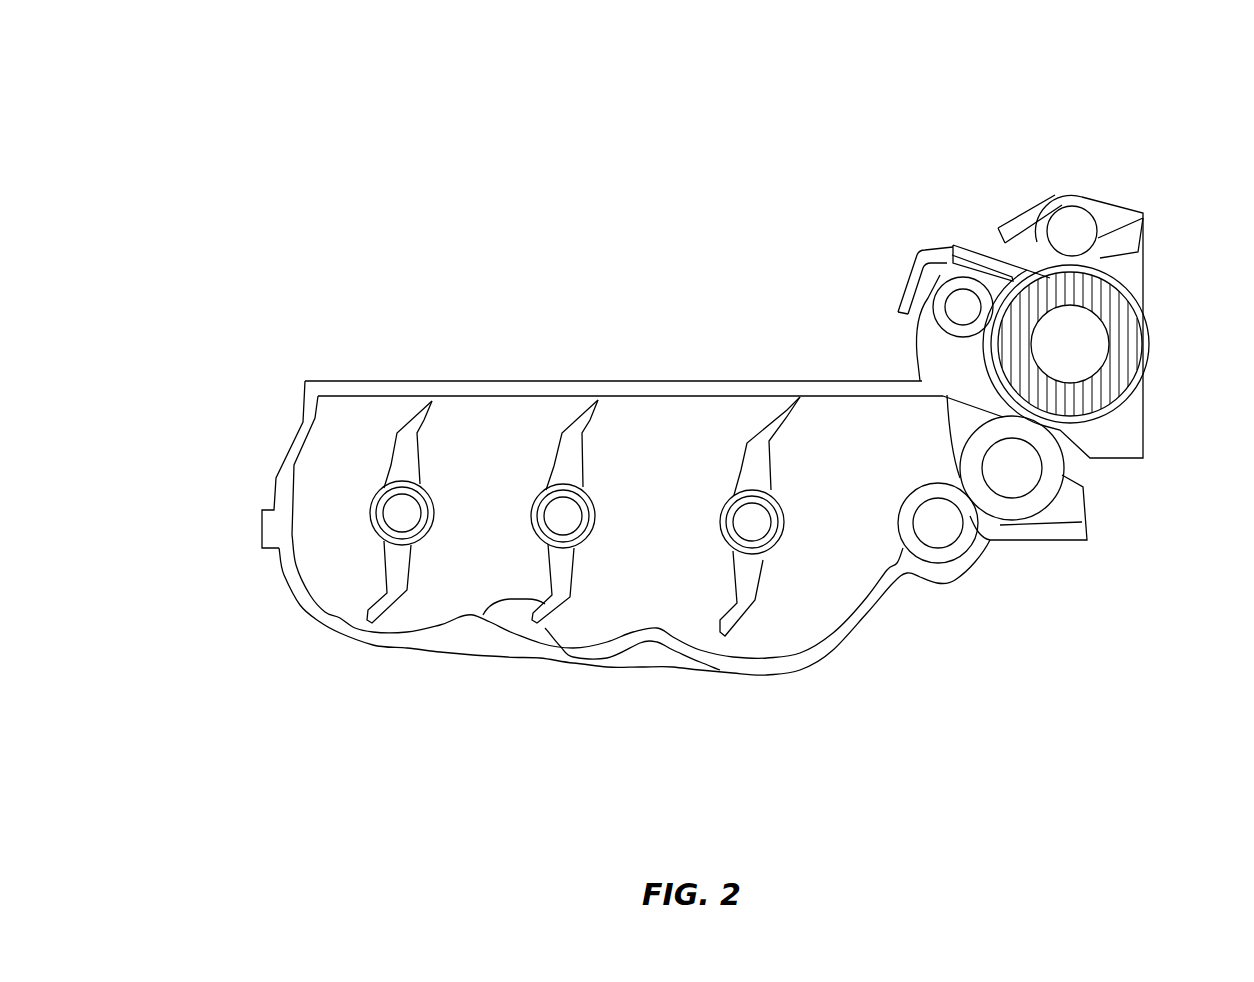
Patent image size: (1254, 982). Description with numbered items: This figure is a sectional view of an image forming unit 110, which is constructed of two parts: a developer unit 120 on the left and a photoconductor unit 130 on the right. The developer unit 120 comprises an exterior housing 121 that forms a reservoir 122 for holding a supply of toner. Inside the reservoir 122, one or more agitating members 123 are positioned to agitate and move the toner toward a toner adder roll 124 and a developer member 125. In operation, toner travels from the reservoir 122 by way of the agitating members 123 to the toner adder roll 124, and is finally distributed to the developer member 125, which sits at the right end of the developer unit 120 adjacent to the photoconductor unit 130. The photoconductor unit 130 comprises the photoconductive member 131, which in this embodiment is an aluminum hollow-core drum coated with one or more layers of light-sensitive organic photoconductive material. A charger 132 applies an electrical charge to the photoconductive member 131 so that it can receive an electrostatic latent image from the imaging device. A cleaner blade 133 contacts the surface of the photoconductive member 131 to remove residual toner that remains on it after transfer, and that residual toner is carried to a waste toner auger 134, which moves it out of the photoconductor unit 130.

The image forming unit 110 is at (410, 180).
The developer unit 120 is at (213, 673).
The exterior housing 121 is at (285, 577).
The reservoir 122 is at (347, 585).
The agitating members 123 is at (410, 592).
The toner adder roll 124 is at (945, 555).
The developer member 125 is at (1080, 480).
The photoconductor unit 130 is at (1115, 137).
The photoconductive member 131 is at (1148, 352).
The charger 132 is at (912, 292).
The cleaner blade 133 is at (972, 246).
The waste toner auger 134 is at (1057, 190).